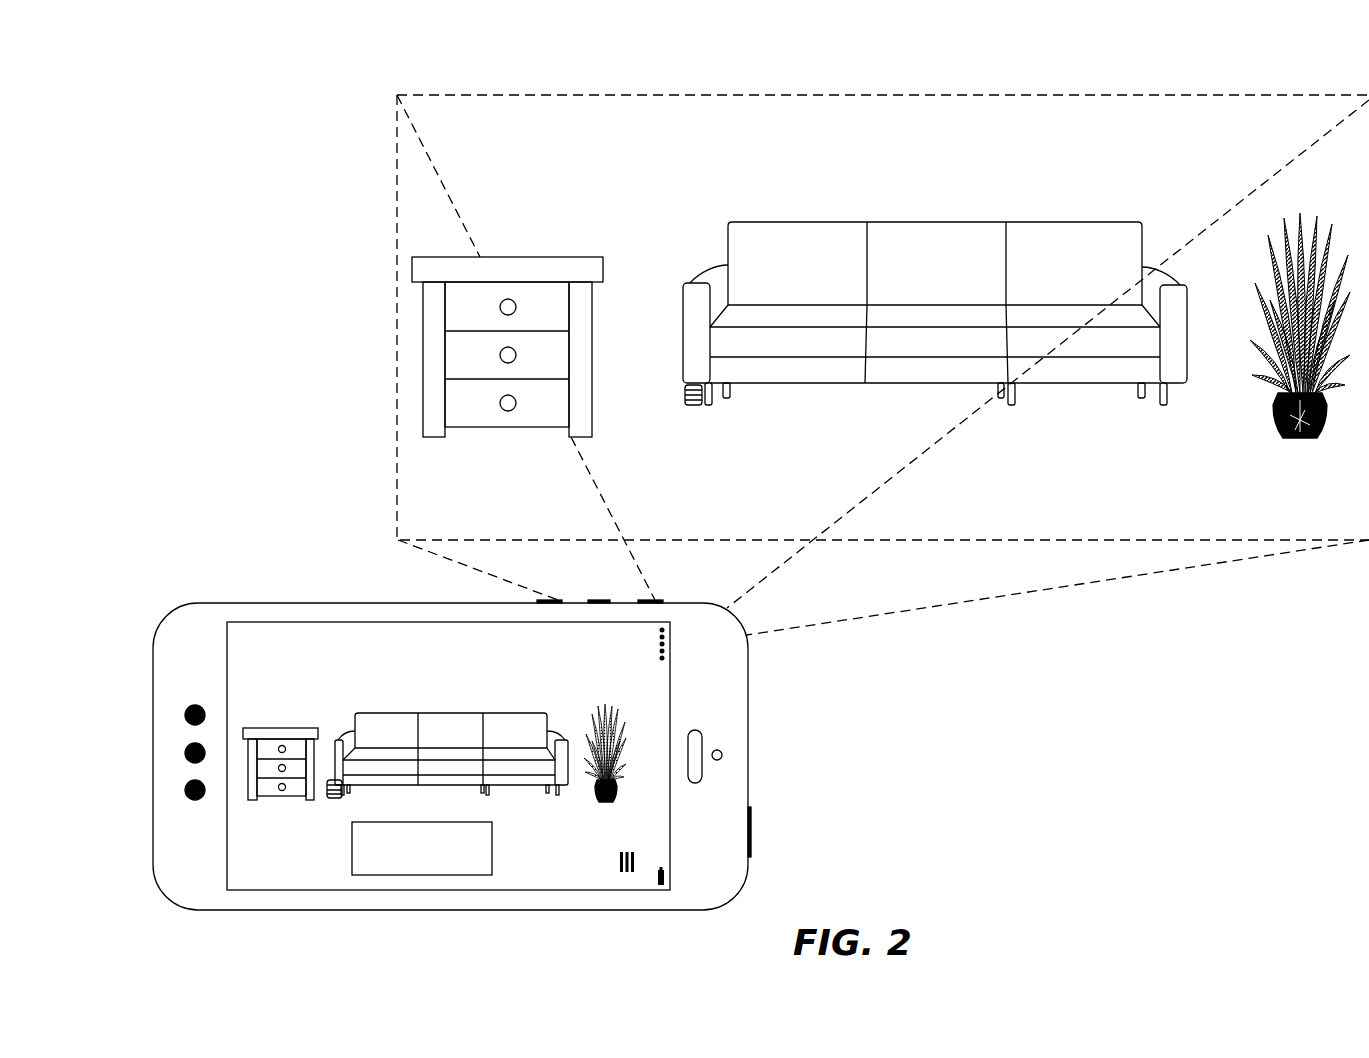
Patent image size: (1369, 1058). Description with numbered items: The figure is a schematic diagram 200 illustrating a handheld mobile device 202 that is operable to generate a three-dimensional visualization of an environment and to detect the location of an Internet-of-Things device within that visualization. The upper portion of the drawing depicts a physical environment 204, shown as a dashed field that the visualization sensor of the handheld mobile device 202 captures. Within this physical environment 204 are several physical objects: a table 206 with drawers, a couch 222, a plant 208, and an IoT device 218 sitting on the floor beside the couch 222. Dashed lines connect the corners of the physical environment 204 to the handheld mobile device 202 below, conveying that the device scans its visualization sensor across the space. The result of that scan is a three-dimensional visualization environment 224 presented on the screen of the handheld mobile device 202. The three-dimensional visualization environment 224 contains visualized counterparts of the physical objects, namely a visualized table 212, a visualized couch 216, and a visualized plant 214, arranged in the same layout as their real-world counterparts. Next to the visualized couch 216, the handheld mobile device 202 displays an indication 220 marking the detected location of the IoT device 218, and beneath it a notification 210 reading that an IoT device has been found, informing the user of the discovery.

The schematic diagram 200 is at (266, 114).
The handheld mobile device 202 is at (254, 603).
The physical environment 204 is at (586, 95).
The table 206 is at (603, 258).
The plant 208 is at (1310, 440).
The notification 210 is at (336, 874).
The visualized table 212 is at (292, 734).
The visualized plant 214 is at (605, 805).
The visualized couch 216 is at (455, 712).
The IoT device 218 is at (683, 393).
The indication 220 is at (337, 802).
The couch 222 is at (933, 222).
The 3D visualization environment 224 is at (448, 756).